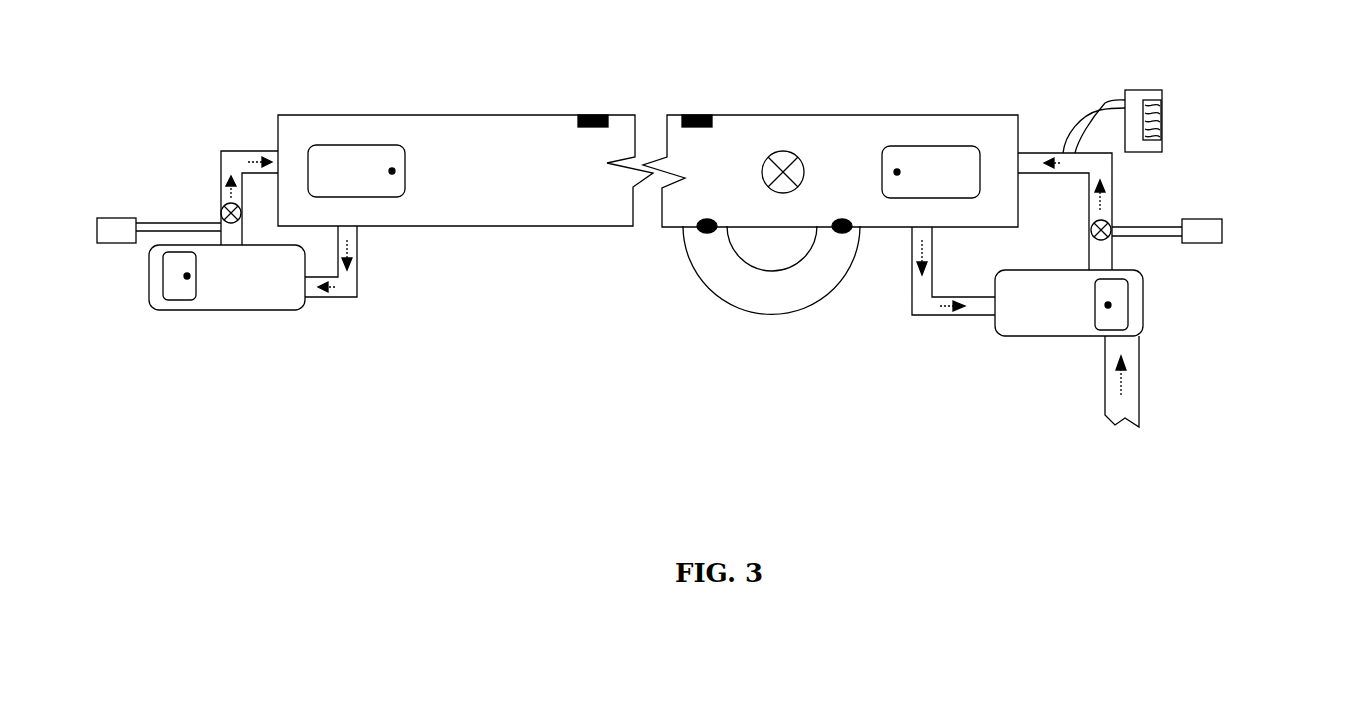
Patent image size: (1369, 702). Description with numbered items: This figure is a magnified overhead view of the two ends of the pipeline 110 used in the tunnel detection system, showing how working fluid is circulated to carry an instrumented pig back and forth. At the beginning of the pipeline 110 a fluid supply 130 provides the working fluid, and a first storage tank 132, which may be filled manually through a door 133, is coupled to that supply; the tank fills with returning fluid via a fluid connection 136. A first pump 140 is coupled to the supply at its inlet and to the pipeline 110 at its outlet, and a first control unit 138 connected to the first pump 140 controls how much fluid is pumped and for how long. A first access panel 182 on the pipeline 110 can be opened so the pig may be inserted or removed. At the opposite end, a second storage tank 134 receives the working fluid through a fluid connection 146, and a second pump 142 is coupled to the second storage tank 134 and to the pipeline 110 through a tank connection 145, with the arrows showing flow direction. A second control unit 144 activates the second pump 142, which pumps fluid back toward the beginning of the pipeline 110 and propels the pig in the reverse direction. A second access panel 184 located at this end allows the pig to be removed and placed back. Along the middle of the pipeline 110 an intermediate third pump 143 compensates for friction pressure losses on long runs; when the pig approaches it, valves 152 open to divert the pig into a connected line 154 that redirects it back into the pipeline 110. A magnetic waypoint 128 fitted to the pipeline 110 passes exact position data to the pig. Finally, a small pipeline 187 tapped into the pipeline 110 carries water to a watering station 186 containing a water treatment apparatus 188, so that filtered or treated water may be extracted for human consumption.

The pipeline 110 is at (502, 115).
The magnetic waypoint 128 is at (597, 115).
The fluid supply 130 is at (1139, 375).
The first storage tank 132 is at (1143, 300).
The door 133 is at (1095, 312).
The second storage tank 134 is at (180, 300).
The fluid connection 136 is at (935, 318).
The first control unit 138 is at (1222, 229).
The first pump 140 is at (1112, 222).
The second pump 142 is at (221, 212).
The intermediate third pump 143 is at (770, 152).
The second control unit 144 is at (118, 243).
The tank connection 145 is at (221, 160).
The fluid connection 146 is at (335, 297).
The valve 152 is at (700, 232).
The connected line 154 is at (728, 300).
The first access panel 182 is at (950, 146).
The second access panel 184 is at (360, 145).
The watering station 186 is at (1132, 90).
The small pipeline 187 is at (1110, 103).
The water treatment apparatus 188 is at (1162, 110).